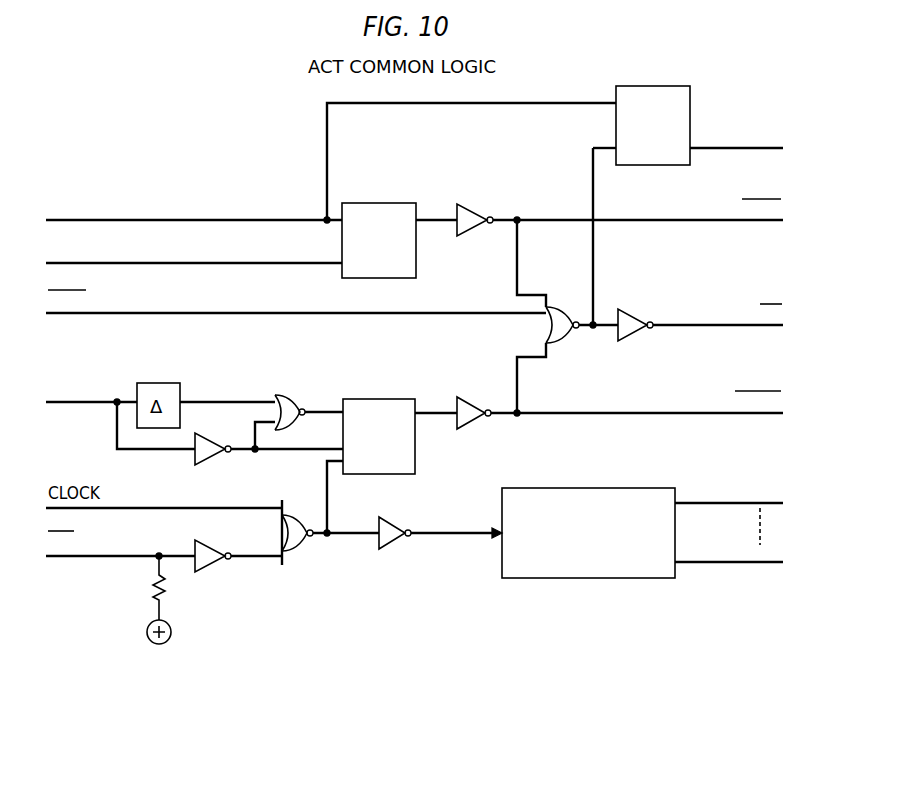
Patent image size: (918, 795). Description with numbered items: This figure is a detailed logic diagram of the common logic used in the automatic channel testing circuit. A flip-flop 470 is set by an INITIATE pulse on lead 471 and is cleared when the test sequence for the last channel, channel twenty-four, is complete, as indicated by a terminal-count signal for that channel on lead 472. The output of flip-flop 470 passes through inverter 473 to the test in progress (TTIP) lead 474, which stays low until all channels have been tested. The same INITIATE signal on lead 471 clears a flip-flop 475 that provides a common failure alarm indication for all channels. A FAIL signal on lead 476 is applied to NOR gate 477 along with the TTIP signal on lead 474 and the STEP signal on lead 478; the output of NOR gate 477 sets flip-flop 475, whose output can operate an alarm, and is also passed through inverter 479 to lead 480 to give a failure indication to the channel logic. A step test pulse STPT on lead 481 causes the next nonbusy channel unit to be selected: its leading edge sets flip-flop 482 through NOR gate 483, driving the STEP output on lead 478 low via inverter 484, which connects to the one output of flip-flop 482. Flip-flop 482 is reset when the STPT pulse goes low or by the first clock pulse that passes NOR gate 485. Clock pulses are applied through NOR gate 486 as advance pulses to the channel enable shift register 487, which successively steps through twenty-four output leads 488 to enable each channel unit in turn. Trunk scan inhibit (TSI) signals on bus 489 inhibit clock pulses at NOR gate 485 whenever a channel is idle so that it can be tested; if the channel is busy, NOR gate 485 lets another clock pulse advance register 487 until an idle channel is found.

The flip-flop 470 is at (379, 212).
The lead 471 is at (222, 217).
The lead 472 is at (217, 265).
The inverter 473 is at (454, 208).
The test in progress (TTIP) lead 474 is at (672, 218).
The flip-flop 475 is at (653, 92).
The lead 476 is at (207, 313).
The NOR gate 477 is at (582, 336).
The lead 478 is at (640, 412).
The inverter 479 is at (634, 314).
The lead 480 is at (709, 319).
The lead 481 is at (73, 405).
The flip-flop 482 is at (379, 406).
The NOR gate 483 is at (306, 401).
The inverter 484 is at (453, 401).
The NOR gate 485 is at (330, 535).
The NOR gate 486 is at (440, 543).
The channel enable shift register 487 is at (575, 490).
The output leads 488 is at (703, 497).
The bus 489 is at (75, 559).